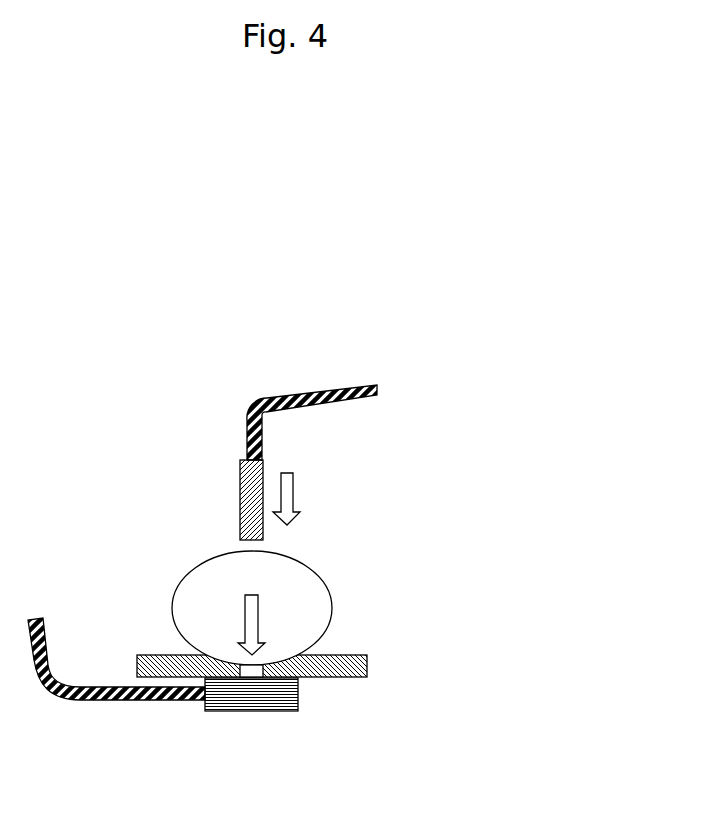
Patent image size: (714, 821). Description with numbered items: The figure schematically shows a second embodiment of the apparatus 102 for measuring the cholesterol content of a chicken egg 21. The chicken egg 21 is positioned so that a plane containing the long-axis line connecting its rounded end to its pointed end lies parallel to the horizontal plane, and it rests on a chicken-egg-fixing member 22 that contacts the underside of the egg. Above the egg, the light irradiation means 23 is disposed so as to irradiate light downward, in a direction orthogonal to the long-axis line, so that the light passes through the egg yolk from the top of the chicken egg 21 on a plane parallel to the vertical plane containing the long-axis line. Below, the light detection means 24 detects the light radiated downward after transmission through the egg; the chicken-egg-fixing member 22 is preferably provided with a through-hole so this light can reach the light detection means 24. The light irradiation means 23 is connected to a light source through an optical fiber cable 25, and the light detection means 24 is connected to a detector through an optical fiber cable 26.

The apparatus 102 is at (555, 366).
The chicken egg 21 is at (305, 562).
The chicken-egg-fixing member 22 is at (367, 664).
The light irradiation means 23 is at (240, 498).
The light detection means 24 is at (250, 712).
The optical fiber cable 25 is at (318, 392).
The optical fiber cable 26 is at (140, 700).